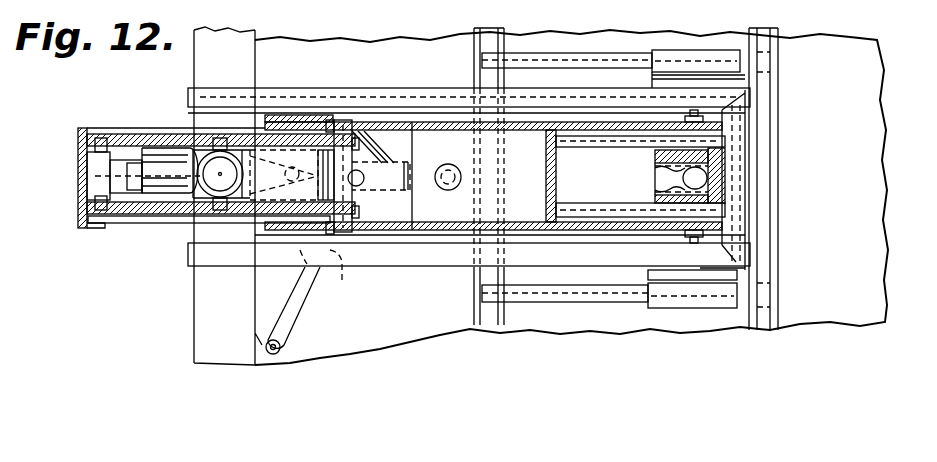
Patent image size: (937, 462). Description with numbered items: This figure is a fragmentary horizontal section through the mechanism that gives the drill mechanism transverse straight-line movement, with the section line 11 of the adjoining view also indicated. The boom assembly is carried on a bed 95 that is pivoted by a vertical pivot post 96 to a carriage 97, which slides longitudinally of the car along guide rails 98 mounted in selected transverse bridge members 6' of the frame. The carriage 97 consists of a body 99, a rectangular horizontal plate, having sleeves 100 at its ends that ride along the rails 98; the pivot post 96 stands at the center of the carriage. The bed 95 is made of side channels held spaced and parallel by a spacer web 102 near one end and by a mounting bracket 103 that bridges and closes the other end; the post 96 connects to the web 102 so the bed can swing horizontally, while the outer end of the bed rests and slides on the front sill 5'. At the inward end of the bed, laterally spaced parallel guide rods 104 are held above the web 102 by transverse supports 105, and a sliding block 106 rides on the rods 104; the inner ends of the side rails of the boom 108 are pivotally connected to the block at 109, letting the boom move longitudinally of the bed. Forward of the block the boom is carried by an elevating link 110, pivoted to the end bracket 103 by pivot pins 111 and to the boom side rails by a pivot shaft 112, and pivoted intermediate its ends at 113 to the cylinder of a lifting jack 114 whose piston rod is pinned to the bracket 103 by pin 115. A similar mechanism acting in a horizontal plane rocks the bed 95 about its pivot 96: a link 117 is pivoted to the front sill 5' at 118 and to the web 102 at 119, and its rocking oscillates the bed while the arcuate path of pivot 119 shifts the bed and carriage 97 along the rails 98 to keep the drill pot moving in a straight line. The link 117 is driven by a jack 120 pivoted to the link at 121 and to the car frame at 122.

The front sill 5' is at (213, 196).
The transverse bridge member 6' is at (621, 179).
The section line 11 is at (683, 13).
The bed 95 is at (745, 130).
The pivot post 96 is at (660, 178).
The carriage 97 is at (645, 276).
The guide rails 98 is at (553, 62).
The body 99 is at (648, 82).
The sleeves 100 is at (722, 45).
The spacer web 102 is at (447, 122).
The mounting bracket 103 is at (82, 177).
The guide rods 104 is at (585, 148).
The transverse supports 105 is at (546, 172).
The sliding block 106 is at (716, 163).
The boom 108 is at (380, 113).
The pivotal connection 109 is at (700, 108).
The elevating link 110 is at (157, 134).
The pivot pins 111 is at (113, 154).
The pivot shaft 112 is at (354, 198).
The pivot 113 is at (219, 139).
The lifting jack 114 is at (172, 193).
The pin 115 is at (133, 150).
The link 117 is at (400, 163).
The pivot 118 is at (292, 175).
The pivot 119 is at (446, 190).
The jack 120 is at (342, 265).
The pivot 121 is at (365, 178).
The pivot 122 is at (280, 347).